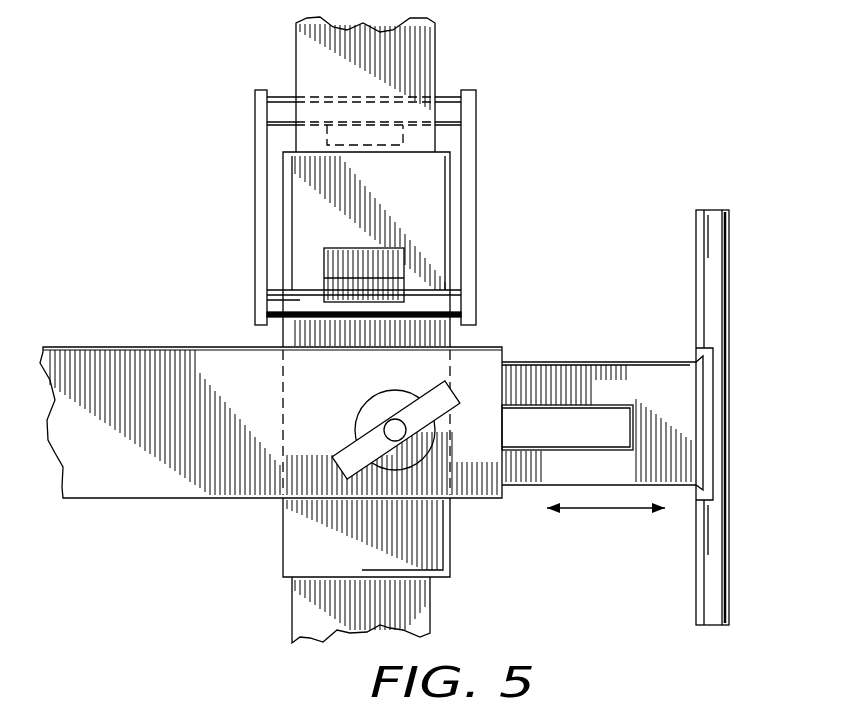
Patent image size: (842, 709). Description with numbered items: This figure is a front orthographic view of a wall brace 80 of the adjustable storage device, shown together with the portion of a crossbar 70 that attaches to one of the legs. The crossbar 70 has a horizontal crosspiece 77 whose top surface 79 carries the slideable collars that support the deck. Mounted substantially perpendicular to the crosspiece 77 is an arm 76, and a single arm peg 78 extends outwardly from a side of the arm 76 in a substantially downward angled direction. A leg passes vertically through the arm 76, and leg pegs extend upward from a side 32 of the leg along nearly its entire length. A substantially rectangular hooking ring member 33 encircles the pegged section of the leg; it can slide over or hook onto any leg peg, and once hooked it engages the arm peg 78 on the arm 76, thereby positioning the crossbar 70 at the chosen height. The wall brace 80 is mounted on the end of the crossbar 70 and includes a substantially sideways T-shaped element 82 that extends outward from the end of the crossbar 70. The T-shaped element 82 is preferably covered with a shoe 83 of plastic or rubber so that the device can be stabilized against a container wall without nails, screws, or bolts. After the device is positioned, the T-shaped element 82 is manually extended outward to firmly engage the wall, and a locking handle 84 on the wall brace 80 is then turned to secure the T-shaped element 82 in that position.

The side of leg 32 is at (308, 48).
The hooking ring member 33 is at (467, 153).
The crossbar 70 is at (124, 336).
The arm 76 is at (435, 194).
The crosspiece 77 is at (122, 473).
The arm peg 78 is at (380, 263).
The top surface 79 is at (222, 347).
The wall brace 80 is at (600, 362).
The T-shaped element 82 is at (711, 211).
The shoe 83 is at (728, 268).
The locking handle 84 is at (352, 457).